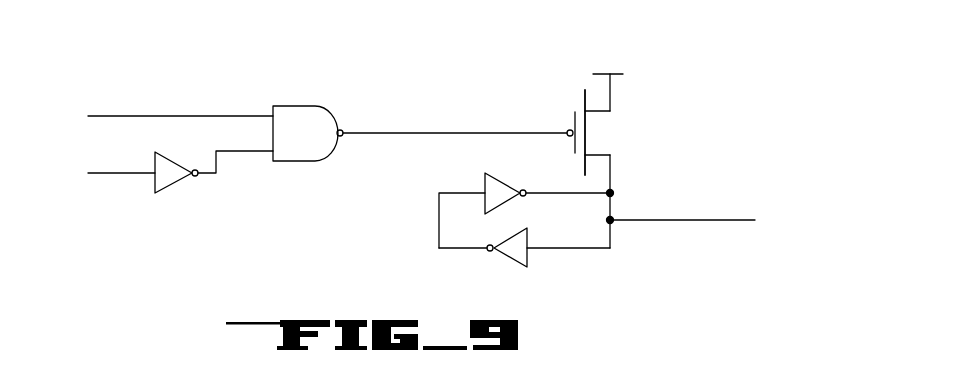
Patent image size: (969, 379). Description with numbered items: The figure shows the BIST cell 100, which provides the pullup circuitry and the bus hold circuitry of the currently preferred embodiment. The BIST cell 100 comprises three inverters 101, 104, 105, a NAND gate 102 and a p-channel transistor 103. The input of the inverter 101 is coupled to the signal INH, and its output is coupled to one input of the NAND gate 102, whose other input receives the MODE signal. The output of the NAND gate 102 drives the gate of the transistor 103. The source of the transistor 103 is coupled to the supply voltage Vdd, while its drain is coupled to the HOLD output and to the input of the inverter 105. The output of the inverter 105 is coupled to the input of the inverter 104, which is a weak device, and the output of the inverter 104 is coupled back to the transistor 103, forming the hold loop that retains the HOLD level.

The BIST cell 100 is at (717, 43).
The inverter 101 is at (172, 185).
The NAND gate 102 is at (420, 133).
The p-channel transistor 103 is at (605, 135).
The inverter 104 is at (505, 181).
The inverter 105 is at (503, 256).